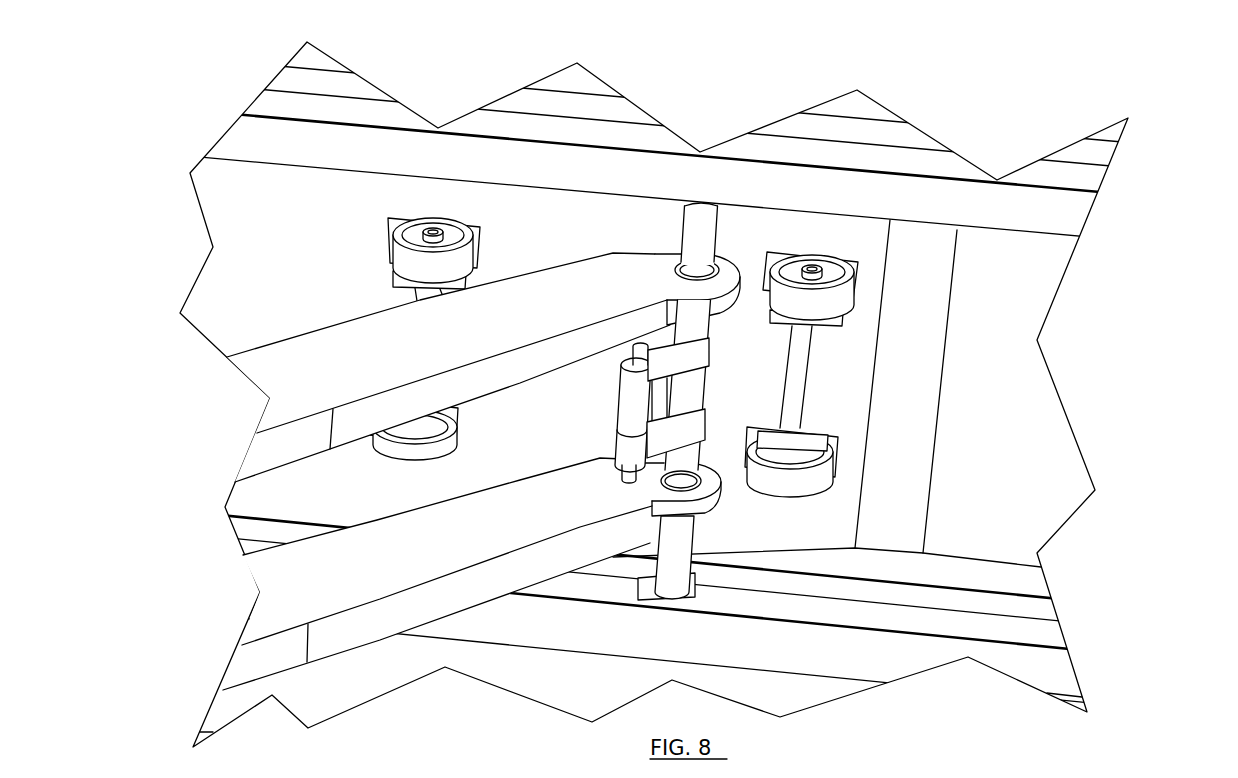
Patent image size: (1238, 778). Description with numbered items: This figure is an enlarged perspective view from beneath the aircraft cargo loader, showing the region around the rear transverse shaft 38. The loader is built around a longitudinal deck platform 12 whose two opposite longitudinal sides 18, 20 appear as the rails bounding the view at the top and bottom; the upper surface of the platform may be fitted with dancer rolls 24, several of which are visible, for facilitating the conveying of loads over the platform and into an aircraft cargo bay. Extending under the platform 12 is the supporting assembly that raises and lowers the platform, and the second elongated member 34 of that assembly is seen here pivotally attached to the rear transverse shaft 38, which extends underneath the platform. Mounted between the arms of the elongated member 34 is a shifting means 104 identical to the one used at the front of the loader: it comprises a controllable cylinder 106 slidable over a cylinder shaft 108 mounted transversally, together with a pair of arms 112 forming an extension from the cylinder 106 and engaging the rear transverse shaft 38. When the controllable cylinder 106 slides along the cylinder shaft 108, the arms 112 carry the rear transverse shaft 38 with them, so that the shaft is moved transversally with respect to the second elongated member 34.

The deck platform 12 is at (1018, 301).
The longitudinal side 18 is at (1070, 213).
The longitudinal side 20 is at (1058, 673).
The dancer rolls 24 is at (400, 262).
The second elongated member 34 is at (517, 328).
The rear transverse shaft 38 is at (722, 233).
The shifting means 104 is at (635, 407).
The controllable cylinder 106 is at (622, 430).
The cylinder shaft 108 is at (637, 354).
The arms 112 is at (713, 353).